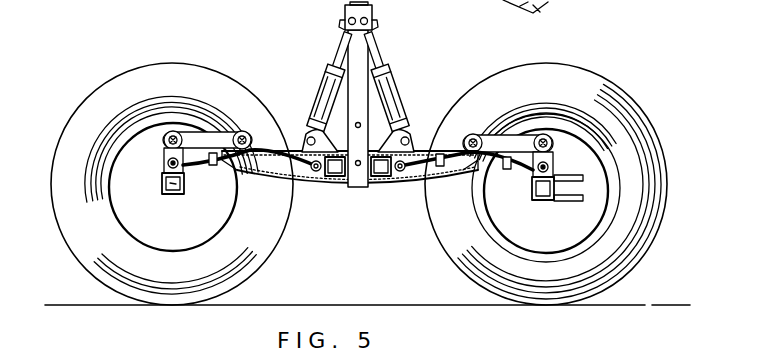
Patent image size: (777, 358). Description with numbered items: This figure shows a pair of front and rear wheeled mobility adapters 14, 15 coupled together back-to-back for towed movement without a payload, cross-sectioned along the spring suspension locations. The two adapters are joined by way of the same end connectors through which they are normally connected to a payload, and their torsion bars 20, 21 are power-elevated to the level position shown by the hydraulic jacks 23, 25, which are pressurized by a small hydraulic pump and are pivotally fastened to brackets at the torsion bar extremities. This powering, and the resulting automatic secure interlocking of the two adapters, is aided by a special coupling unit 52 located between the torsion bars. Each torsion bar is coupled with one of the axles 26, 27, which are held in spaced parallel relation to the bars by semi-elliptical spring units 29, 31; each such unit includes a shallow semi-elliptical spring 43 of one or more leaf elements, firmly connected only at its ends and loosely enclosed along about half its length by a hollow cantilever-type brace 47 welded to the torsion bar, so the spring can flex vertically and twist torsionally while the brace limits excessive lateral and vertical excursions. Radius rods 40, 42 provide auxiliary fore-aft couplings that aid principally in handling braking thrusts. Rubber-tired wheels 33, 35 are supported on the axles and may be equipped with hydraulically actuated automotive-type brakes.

The front wheeled adapter 14 is at (547, 57).
The rear wheeled adapter 15 is at (218, 56).
The torsion bar 20 is at (383, 178).
The torsion bar 21 is at (337, 178).
The hydraulic jack 23 is at (390, 107).
The hydraulic jack 25 is at (328, 88).
The axle 26 is at (542, 202).
The axle 27 is at (170, 195).
The semi-elliptical spring unit 29 is at (443, 185).
The semi-elliptical spring unit 31 is at (278, 185).
The rubber-tired wheel 33 is at (612, 93).
The rubber-tired wheel 35 is at (135, 88).
The radius rod 40 is at (502, 134).
The radius rod 42 is at (212, 131).
The semi-elliptical spring 43 is at (457, 148).
The cantilever-type brace 47 is at (431, 148).
The coupling unit 52 is at (361, 109).